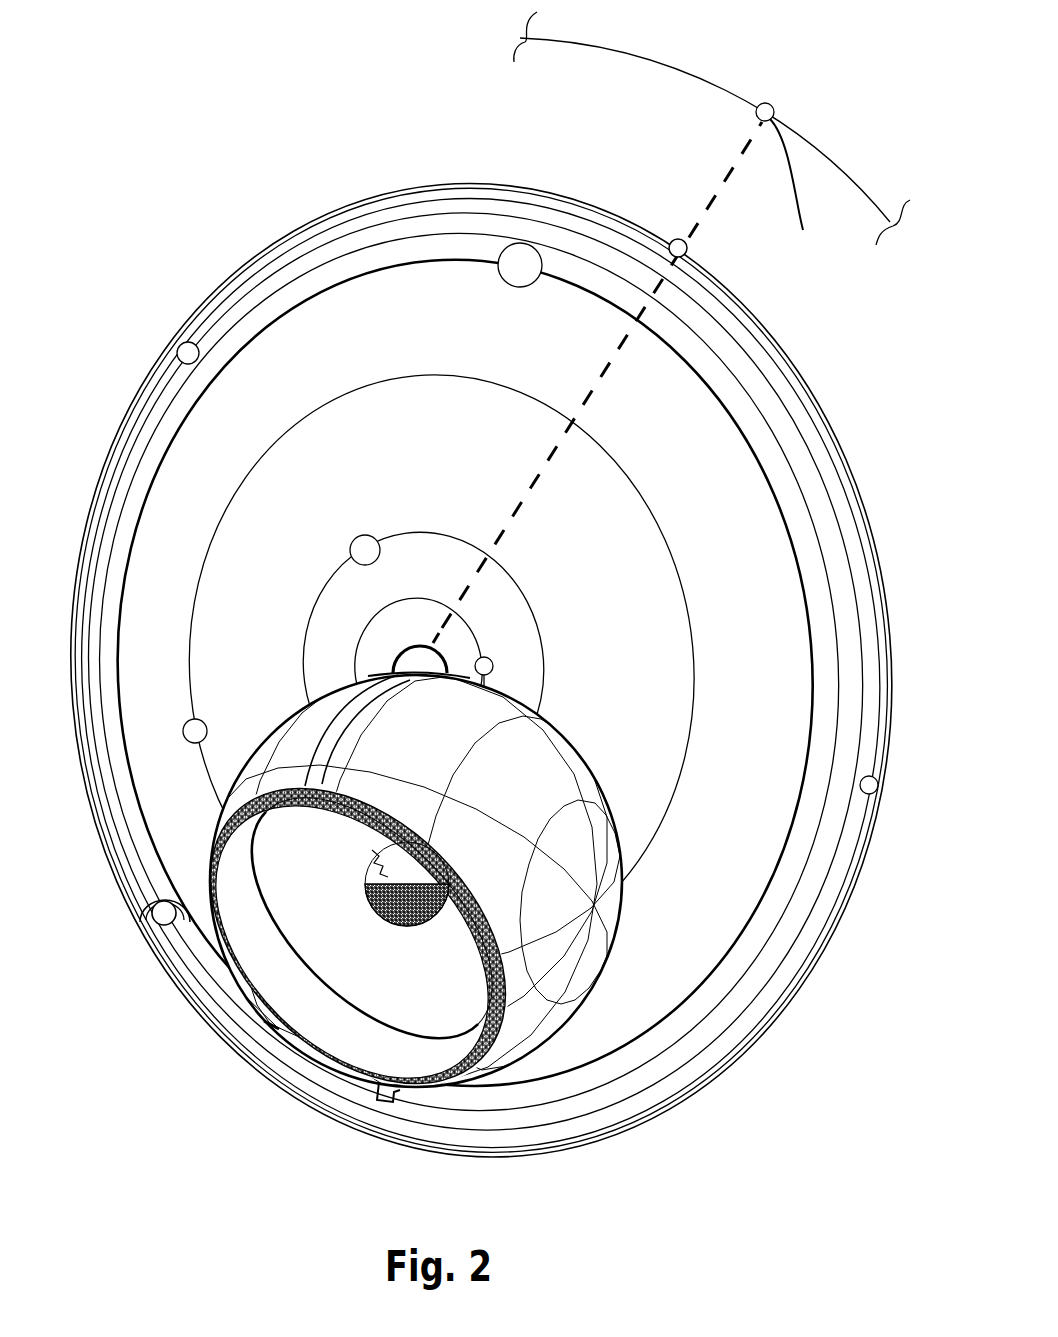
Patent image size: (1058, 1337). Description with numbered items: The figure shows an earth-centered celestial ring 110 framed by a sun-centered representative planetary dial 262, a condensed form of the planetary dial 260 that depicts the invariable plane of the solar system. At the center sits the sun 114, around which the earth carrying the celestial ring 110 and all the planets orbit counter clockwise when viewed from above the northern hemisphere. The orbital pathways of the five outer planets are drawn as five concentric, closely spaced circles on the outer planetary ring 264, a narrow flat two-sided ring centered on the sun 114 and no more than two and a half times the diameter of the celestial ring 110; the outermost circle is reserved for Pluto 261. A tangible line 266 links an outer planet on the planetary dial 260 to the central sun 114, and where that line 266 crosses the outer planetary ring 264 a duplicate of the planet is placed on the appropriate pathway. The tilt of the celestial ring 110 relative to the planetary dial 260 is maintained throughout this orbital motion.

The celestial ring 110 is at (540, 1060).
The sun 114 is at (418, 660).
The planetary dial 260 is at (642, 56).
The Pluto 261 is at (686, 250).
The representative planetary dial 262 is at (698, 1090).
The outer planetary ring 264 is at (157, 413).
The lines 266 is at (721, 182).